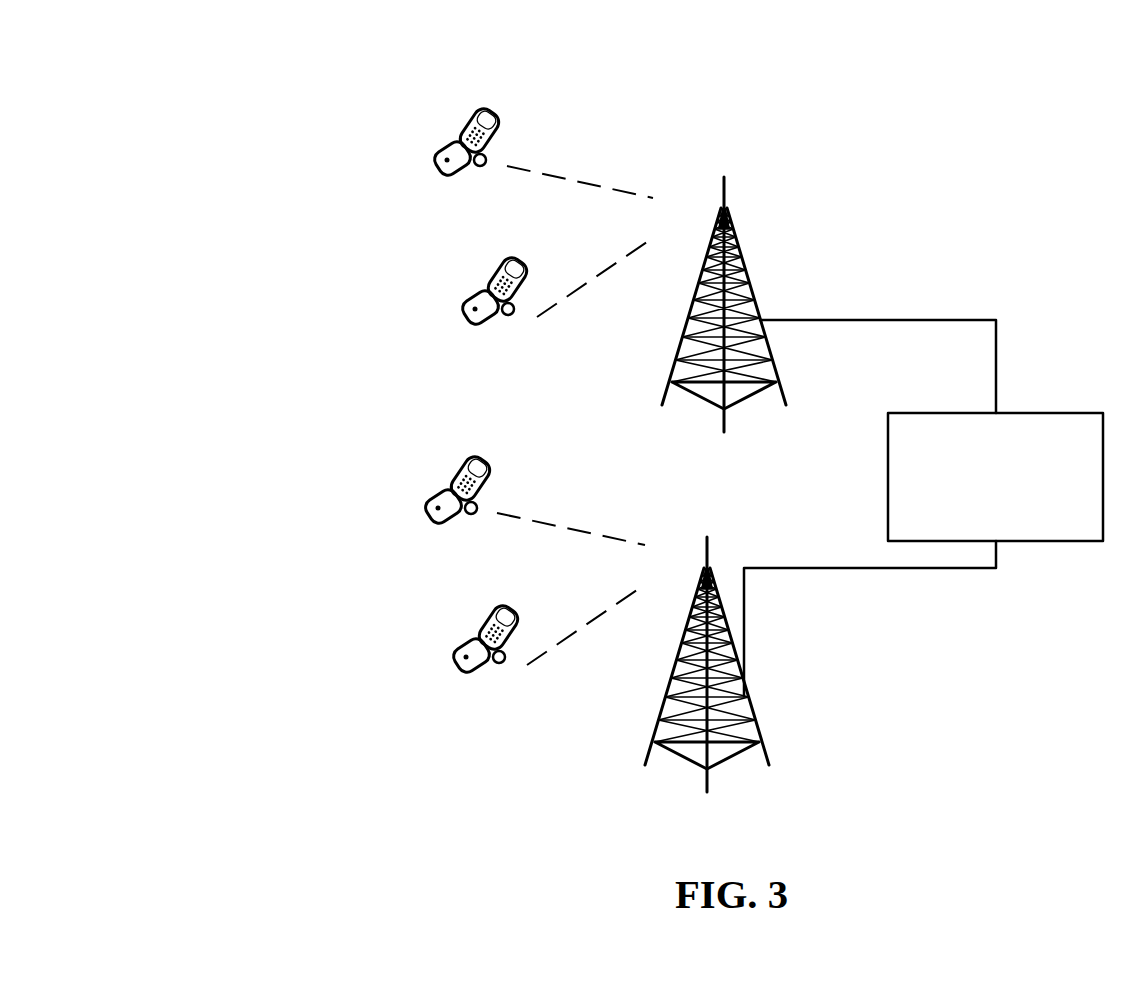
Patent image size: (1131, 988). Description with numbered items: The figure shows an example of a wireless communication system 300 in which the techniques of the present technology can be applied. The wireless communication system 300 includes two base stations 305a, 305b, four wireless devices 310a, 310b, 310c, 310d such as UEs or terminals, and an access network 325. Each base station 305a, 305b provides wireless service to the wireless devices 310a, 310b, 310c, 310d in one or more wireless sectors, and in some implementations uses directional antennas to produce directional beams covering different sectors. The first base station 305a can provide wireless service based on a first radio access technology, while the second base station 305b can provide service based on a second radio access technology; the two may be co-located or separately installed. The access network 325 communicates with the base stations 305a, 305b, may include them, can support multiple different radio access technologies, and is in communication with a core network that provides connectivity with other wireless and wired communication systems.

The wireless communication system 300 is at (242, 46).
The first base station 305a is at (738, 260).
The second base station 305b is at (708, 563).
The wireless device 310a is at (468, 116).
The wireless device 310b is at (497, 266).
The wireless device 310c is at (458, 463).
The wireless device 310d is at (488, 613).
The access network 325 is at (897, 413).